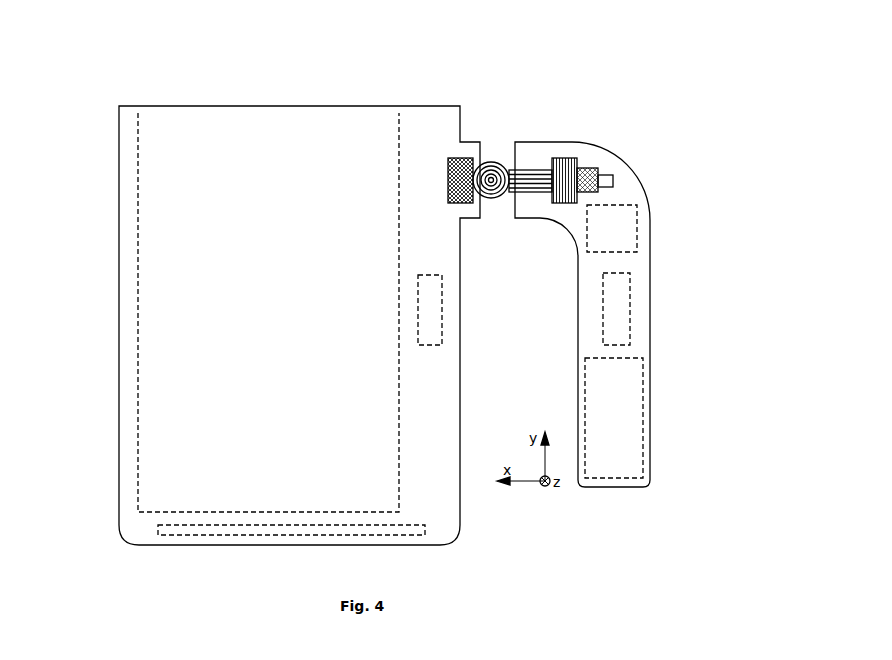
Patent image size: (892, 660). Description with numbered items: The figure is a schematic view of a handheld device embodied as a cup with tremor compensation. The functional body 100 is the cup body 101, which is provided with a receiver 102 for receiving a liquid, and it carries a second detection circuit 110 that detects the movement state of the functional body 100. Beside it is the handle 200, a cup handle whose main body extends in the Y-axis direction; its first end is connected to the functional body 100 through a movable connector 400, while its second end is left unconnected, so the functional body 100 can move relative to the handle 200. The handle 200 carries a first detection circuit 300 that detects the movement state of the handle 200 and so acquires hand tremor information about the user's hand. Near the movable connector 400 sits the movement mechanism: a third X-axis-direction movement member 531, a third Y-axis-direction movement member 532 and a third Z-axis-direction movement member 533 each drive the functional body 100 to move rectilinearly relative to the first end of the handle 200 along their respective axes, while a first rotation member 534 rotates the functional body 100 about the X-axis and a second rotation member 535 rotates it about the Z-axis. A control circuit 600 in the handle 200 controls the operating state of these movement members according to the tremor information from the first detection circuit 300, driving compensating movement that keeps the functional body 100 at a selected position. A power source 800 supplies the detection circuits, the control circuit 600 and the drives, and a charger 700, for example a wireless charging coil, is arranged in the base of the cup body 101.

The functional body 100 is at (261, 325).
The cup body 101 is at (119, 127).
The receiver 102 is at (138, 170).
The second detection circuit 110 is at (435, 310).
The handle 200 is at (605, 148).
The first detection circuit 300 is at (615, 310).
The movable connector 400 is at (610, 182).
The third X-axis-direction movement member 531 is at (530, 170).
The third Y-axis-direction movement member 532 is at (547, 198).
The third Z-axis-direction movement member 533 is at (593, 170).
The first rotation member 534 is at (466, 158).
The second rotation member 535 is at (497, 163).
The control circuit 600 is at (615, 418).
The charger 700 is at (425, 530).
The power source 800 is at (610, 228).